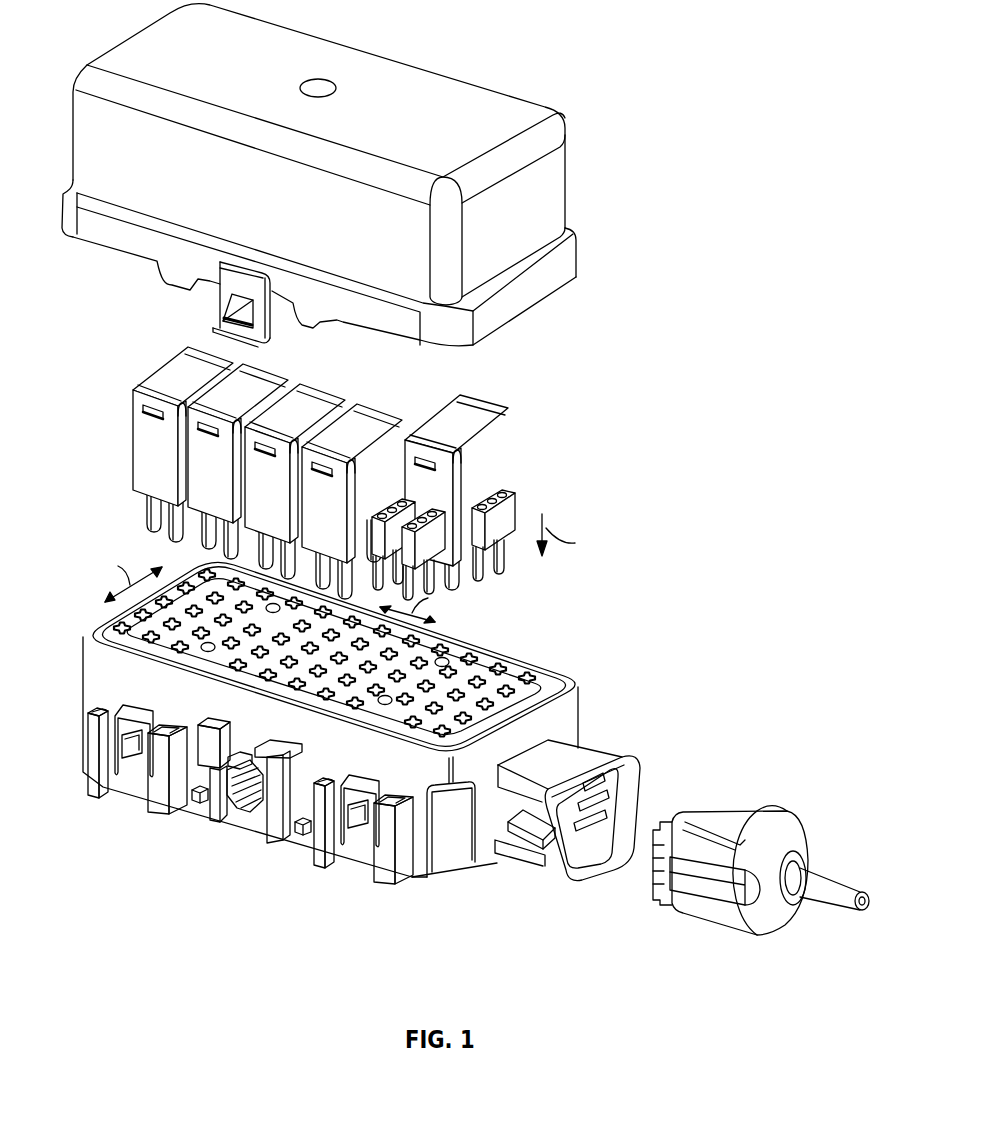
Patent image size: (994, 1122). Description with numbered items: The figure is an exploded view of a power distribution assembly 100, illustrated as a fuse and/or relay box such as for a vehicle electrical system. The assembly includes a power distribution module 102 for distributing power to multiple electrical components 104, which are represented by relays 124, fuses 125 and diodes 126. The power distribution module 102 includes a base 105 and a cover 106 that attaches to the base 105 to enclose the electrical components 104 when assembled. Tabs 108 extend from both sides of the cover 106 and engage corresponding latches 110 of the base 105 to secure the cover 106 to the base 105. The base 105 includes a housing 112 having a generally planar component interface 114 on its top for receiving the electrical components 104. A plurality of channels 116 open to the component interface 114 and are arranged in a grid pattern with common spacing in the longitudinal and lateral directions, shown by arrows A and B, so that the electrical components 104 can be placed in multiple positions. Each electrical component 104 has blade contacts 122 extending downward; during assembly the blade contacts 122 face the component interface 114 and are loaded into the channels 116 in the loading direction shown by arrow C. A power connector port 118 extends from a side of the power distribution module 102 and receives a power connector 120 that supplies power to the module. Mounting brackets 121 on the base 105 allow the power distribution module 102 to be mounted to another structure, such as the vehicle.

The power distribution assembly 100 is at (465, 477).
The power distribution module 102 is at (410, 756).
The electrical components 104 is at (377, 485).
The base 105 is at (450, 847).
The cover 106 is at (343, 182).
The tabs 108 is at (272, 335).
The latches 110 is at (217, 822).
The housing 112 is at (563, 728).
The component interface 114 is at (349, 653).
The channels 116 is at (442, 656).
The power connector port 118 is at (630, 797).
The power connector 120 is at (712, 820).
The mounting brackets 121 is at (377, 873).
The blade contacts 122 is at (150, 516).
The relays 124 is at (503, 452).
The fuses 125 is at (507, 514).
The diodes 126 is at (428, 548).